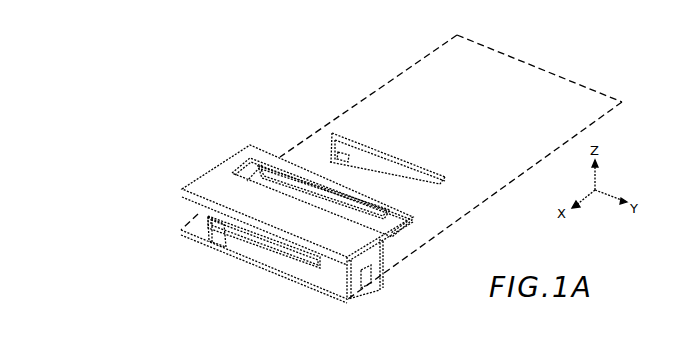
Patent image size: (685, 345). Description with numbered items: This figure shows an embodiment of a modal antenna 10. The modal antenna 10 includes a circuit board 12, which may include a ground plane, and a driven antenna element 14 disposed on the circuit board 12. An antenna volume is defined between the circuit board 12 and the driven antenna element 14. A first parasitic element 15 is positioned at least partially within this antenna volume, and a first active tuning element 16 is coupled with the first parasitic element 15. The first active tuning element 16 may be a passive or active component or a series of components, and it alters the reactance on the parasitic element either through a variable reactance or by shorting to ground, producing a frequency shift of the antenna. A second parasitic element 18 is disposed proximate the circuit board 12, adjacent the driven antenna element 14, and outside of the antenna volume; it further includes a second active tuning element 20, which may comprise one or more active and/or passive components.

The modal antenna 10 is at (127, 65).
The circuit board 12 is at (378, 100).
The driven antenna element 14 is at (209, 171).
The first parasitic element 15 is at (283, 250).
The first active tuning element 16 is at (209, 244).
The second parasitic element 18 is at (403, 153).
The second active tuning element 20 is at (340, 155).